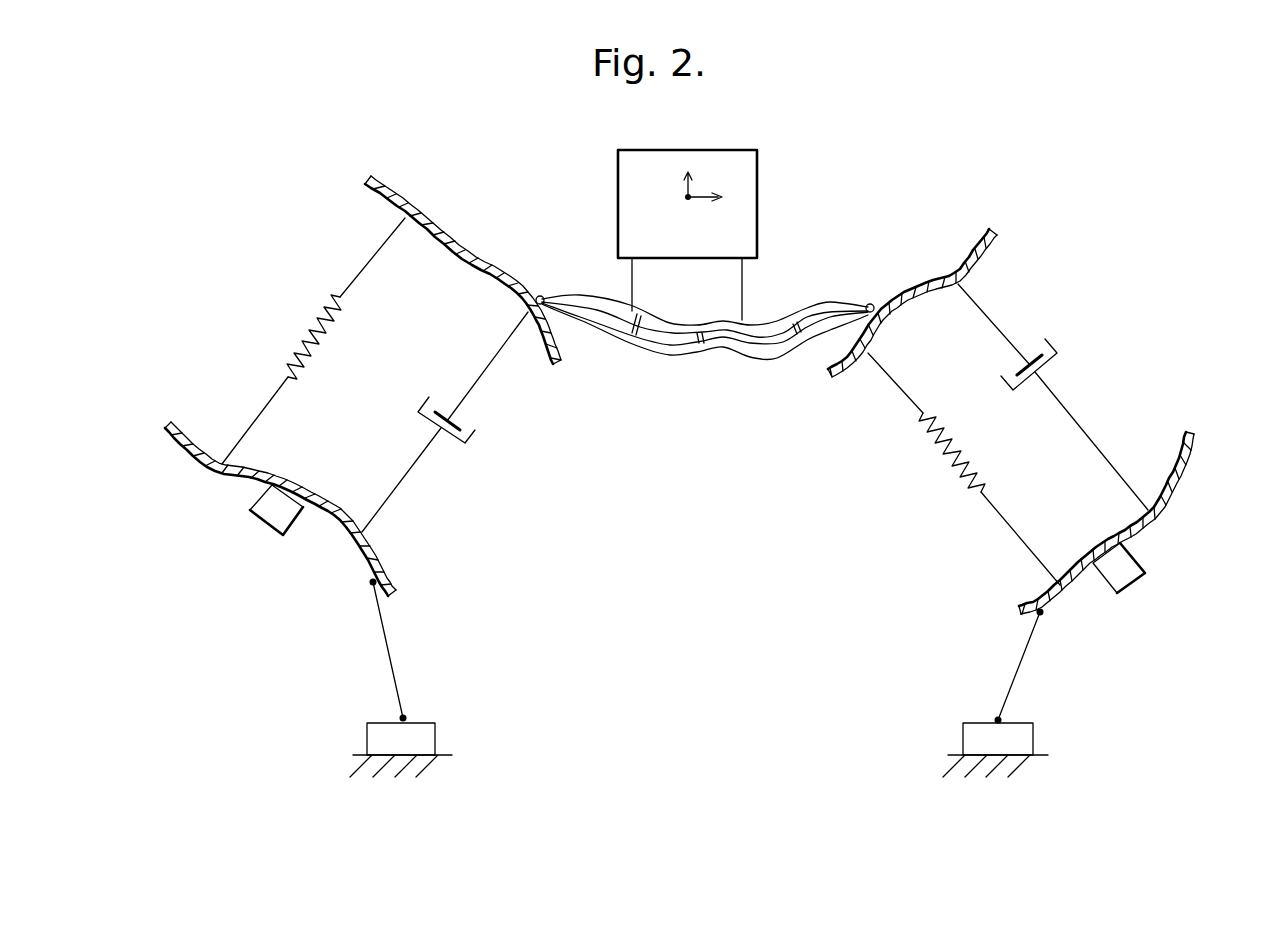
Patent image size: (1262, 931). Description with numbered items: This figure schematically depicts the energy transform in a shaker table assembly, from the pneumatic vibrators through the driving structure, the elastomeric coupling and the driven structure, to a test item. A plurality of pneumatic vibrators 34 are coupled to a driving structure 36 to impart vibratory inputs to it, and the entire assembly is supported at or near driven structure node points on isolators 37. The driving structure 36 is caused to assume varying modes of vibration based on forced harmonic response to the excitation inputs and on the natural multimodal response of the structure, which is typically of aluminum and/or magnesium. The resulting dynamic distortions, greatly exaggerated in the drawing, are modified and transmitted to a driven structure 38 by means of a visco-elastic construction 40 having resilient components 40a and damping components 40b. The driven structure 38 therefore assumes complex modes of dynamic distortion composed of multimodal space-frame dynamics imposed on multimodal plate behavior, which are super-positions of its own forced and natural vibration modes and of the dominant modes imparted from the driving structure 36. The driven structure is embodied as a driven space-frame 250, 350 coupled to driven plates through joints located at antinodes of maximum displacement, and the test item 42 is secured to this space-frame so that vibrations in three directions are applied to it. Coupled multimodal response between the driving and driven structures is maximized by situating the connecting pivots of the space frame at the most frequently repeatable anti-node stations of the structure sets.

The pneumatic vibrators 34 is at (283, 536).
The driving structure 36 is at (165, 436).
The isolators 37 is at (432, 725).
The driven structure 38 is at (375, 180).
The visco-elastic construction 40 is at (683, 401).
The resilient components 40a is at (327, 332).
The damping components 40b is at (463, 440).
The test item 42 is at (757, 211).
The driven space-frame 250 is at (705, 353).
The driven space-frame 350 is at (697, 358).